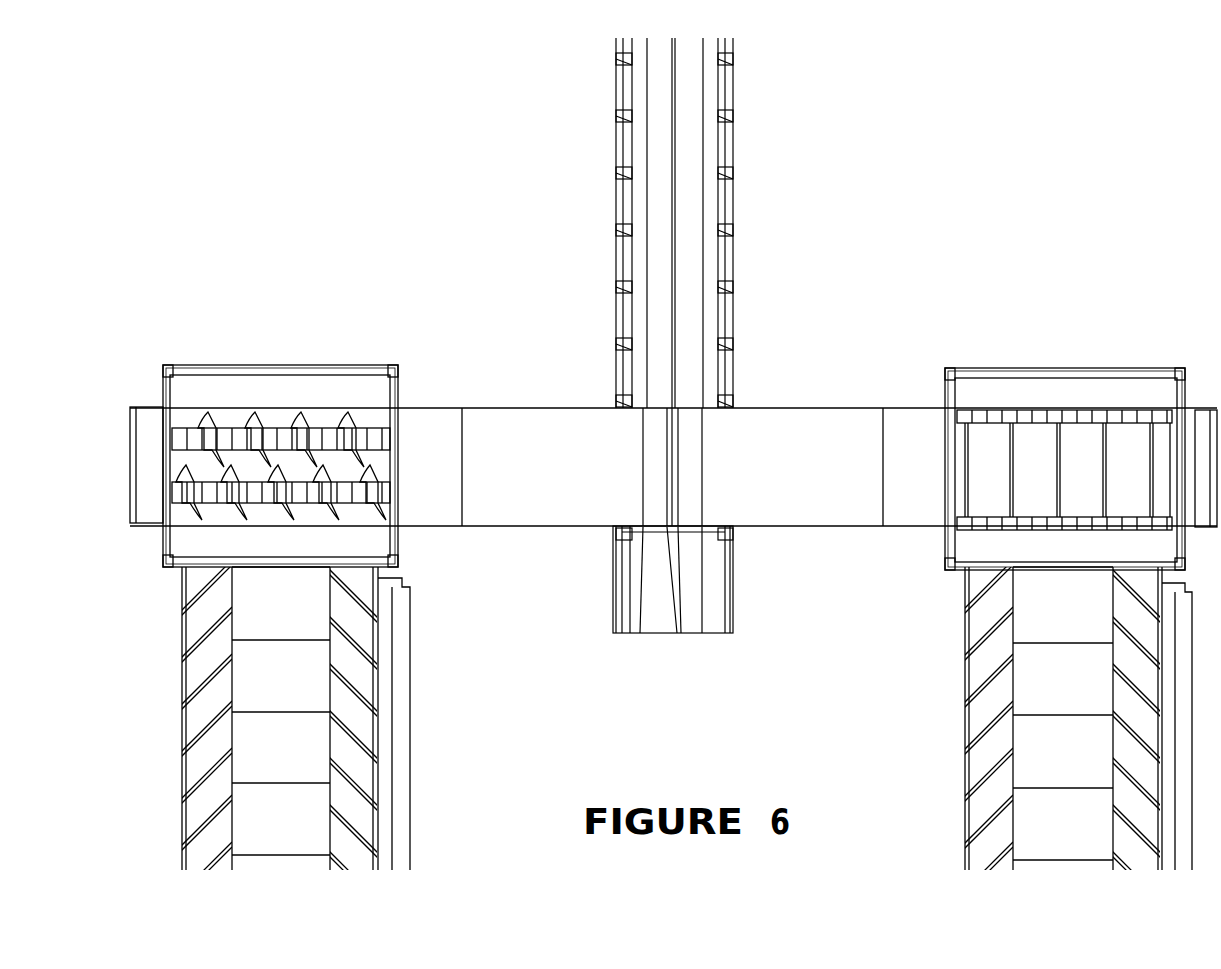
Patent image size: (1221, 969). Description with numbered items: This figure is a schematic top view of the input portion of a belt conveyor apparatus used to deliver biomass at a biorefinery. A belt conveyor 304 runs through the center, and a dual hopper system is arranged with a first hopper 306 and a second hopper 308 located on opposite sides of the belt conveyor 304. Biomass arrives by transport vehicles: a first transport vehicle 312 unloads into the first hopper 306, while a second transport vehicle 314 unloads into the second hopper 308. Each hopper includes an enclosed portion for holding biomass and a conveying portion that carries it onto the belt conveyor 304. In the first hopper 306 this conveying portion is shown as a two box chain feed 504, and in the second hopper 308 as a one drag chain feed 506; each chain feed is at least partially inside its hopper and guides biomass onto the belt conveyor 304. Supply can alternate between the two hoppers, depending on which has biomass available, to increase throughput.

The belt conveyor 304 is at (762, 184).
The first hopper 306 is at (260, 415).
The second hopper 308 is at (1081, 421).
The first transport vehicle 312 is at (291, 686).
The second transport vehicle 314 is at (1071, 686).
The two box chain feed 504 is at (278, 422).
The one drag chain feed 506 is at (1005, 410).